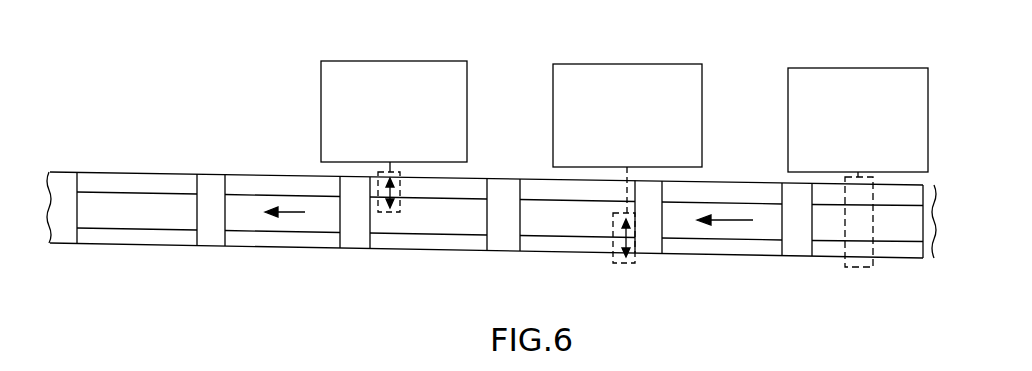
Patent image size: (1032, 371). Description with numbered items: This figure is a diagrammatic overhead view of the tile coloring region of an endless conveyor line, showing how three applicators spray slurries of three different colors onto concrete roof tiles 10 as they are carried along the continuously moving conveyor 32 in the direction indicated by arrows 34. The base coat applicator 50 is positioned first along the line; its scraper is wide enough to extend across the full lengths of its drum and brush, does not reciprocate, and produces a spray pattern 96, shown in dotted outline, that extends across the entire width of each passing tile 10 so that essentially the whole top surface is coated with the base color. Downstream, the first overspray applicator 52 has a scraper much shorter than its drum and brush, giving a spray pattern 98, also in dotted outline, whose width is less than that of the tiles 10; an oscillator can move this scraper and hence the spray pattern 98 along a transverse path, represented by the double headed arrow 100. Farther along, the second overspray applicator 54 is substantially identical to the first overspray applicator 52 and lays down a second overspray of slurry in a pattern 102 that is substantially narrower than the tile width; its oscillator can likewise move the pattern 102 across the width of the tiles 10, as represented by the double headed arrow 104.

The tile 10 is at (131, 237).
The conveyor 32 is at (796, 249).
The direction of travel 34 is at (286, 213).
The base coat applicator 50 is at (838, 68).
The first overspray applicator 52 is at (624, 63).
The second overspray applicator 54 is at (402, 60).
The spray pattern 96 is at (848, 268).
The spray pattern 98 is at (613, 265).
The double headed arrow 100 is at (628, 237).
The pattern 102 is at (383, 213).
The double headed arrow 104 is at (397, 197).